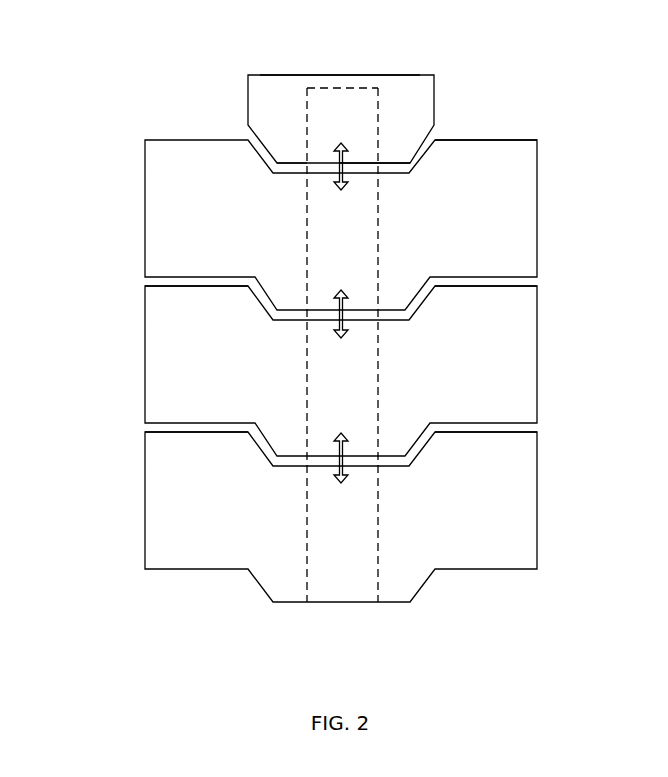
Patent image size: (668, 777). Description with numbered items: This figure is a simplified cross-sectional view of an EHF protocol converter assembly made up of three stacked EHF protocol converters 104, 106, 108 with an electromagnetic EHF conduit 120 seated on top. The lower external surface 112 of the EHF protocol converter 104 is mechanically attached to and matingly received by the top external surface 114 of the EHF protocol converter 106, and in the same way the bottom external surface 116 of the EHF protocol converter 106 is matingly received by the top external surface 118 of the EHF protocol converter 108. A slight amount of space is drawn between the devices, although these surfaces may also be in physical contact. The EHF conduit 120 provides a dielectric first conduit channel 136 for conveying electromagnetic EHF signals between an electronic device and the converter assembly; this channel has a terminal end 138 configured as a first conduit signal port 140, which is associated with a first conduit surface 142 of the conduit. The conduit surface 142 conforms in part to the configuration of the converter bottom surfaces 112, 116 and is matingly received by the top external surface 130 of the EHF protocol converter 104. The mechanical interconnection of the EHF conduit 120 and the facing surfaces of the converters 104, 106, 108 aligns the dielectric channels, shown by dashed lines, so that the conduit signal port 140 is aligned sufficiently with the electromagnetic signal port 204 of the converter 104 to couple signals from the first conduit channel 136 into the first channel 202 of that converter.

The EHF protocol converter 104 is at (538, 163).
The EHF protocol converter 106 is at (538, 337).
The EHF protocol converter 108 is at (538, 503).
The lower external surface 112 is at (149, 284).
The top external surface 114 is at (525, 284).
The bottom external surface 116 is at (150, 429).
The top external surface 118 is at (526, 427).
The EHF conduit 120 is at (247, 88).
The top external surface 130 is at (537, 140).
The first conduit channel 136 is at (294, 76).
The terminal end 138 is at (306, 158).
The first conduit signal port 140 is at (363, 163).
The first conduit surface 142 is at (356, 173).
The first channel 202 is at (380, 258).
The electromagnetic signal port 204 is at (307, 175).